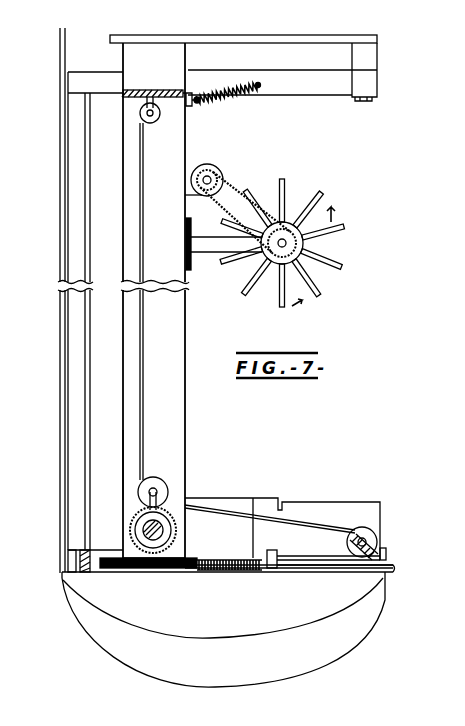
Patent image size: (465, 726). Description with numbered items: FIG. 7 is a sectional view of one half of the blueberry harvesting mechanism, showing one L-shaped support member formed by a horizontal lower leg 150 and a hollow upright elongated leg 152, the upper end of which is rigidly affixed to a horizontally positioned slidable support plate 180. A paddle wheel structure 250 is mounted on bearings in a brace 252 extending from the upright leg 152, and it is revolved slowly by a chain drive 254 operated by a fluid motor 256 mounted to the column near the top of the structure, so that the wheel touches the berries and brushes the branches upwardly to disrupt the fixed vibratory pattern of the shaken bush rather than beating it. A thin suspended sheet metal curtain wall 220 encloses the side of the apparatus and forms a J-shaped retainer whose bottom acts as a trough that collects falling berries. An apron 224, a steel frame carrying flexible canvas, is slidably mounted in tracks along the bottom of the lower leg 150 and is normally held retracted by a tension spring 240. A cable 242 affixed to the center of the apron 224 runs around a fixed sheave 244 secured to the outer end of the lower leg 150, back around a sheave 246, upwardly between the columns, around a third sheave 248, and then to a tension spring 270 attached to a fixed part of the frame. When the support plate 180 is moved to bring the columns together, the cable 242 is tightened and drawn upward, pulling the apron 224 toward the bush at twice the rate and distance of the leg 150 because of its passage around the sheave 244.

The horizontal lower leg 150 is at (293, 507).
The upright elongated leg 152 is at (178, 412).
The slidable support plate 180 is at (295, 37).
The curtain wall 220 is at (60, 310).
The apron 224 is at (392, 566).
The tension spring 240 is at (215, 570).
The cable 242 is at (143, 218).
The fixed sheave 244 is at (360, 540).
The sheave 246 is at (160, 487).
The third sheave 248 is at (158, 117).
The paddle wheel structure 250 is at (323, 192).
The brace 252 is at (203, 248).
The chain drive 254 is at (245, 195).
The fluid motor 256 is at (218, 170).
The tension spring 270 is at (225, 90).